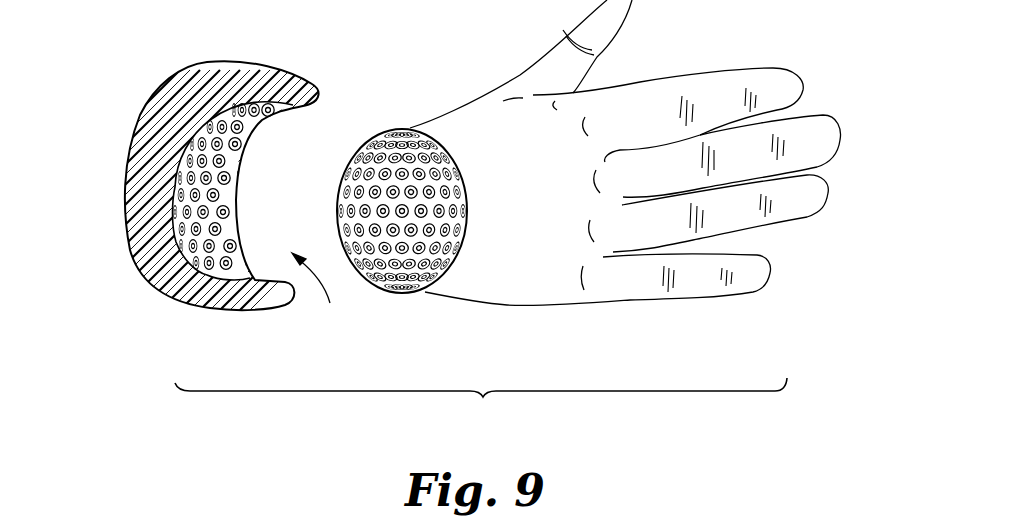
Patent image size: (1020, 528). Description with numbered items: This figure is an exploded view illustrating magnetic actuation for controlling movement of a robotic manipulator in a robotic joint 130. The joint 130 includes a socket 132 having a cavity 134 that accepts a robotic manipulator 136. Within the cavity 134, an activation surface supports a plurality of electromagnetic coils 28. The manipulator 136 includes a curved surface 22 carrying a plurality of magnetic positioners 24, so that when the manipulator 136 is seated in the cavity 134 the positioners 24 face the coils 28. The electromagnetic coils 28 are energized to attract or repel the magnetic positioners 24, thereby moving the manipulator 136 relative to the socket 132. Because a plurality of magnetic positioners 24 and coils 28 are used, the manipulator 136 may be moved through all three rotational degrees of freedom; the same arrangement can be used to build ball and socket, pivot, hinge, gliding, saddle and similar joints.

The robotic joint 130 is at (481, 401).
The socket 132 is at (163, 93).
The cavity 134 is at (318, 293).
The robotic manipulator 136 is at (507, 307).
The curved surface 22 is at (405, 130).
The magnetic positioners 24 is at (356, 180).
The electromagnetic coils 28 is at (227, 184).